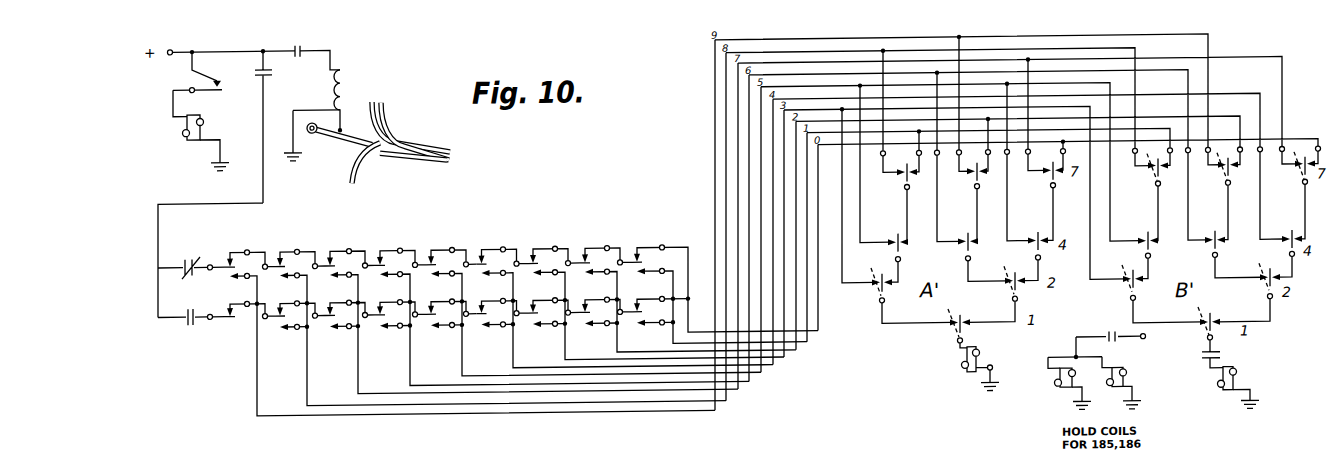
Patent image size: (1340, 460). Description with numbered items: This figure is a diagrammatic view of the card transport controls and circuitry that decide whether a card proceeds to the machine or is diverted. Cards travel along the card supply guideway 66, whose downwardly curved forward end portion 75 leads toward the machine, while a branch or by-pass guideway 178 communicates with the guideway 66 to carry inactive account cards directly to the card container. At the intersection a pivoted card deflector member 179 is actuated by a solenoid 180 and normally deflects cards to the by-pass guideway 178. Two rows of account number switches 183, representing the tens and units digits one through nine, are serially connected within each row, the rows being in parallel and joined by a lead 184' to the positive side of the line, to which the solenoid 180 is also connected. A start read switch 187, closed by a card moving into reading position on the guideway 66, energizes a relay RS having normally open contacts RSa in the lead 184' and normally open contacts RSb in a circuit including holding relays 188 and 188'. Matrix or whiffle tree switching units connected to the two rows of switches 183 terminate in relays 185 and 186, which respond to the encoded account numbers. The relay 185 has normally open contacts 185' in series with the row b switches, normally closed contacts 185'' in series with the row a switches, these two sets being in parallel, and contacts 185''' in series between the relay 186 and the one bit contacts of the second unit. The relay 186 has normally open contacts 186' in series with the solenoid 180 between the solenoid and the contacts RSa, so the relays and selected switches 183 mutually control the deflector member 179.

The normally open contacts 186' is at (321, 39).
The solenoid 180 is at (344, 63).
The by-pass guideway 178 is at (390, 100).
The card deflector member 179 is at (396, 117).
The downwardly curved forward end portion 75 is at (368, 169).
The card supply guideway 66 is at (438, 159).
The start read switch 187 is at (222, 88).
The relay RS is at (198, 143).
The normally open contacts RSa is at (308, 75).
The normally open contacts RSb is at (1120, 330).
The lead 184' is at (233, 255).
The normally closed contacts 185'' is at (191, 252).
The normally open contacts 185' is at (191, 340).
The account number switches 183 is at (276, 256).
The relay 185 is at (948, 367).
The holding relay 188 is at (1051, 395).
The holding relay 188' is at (1140, 386).
The contacts 185''' is at (1246, 353).
The relay 186 is at (1225, 392).